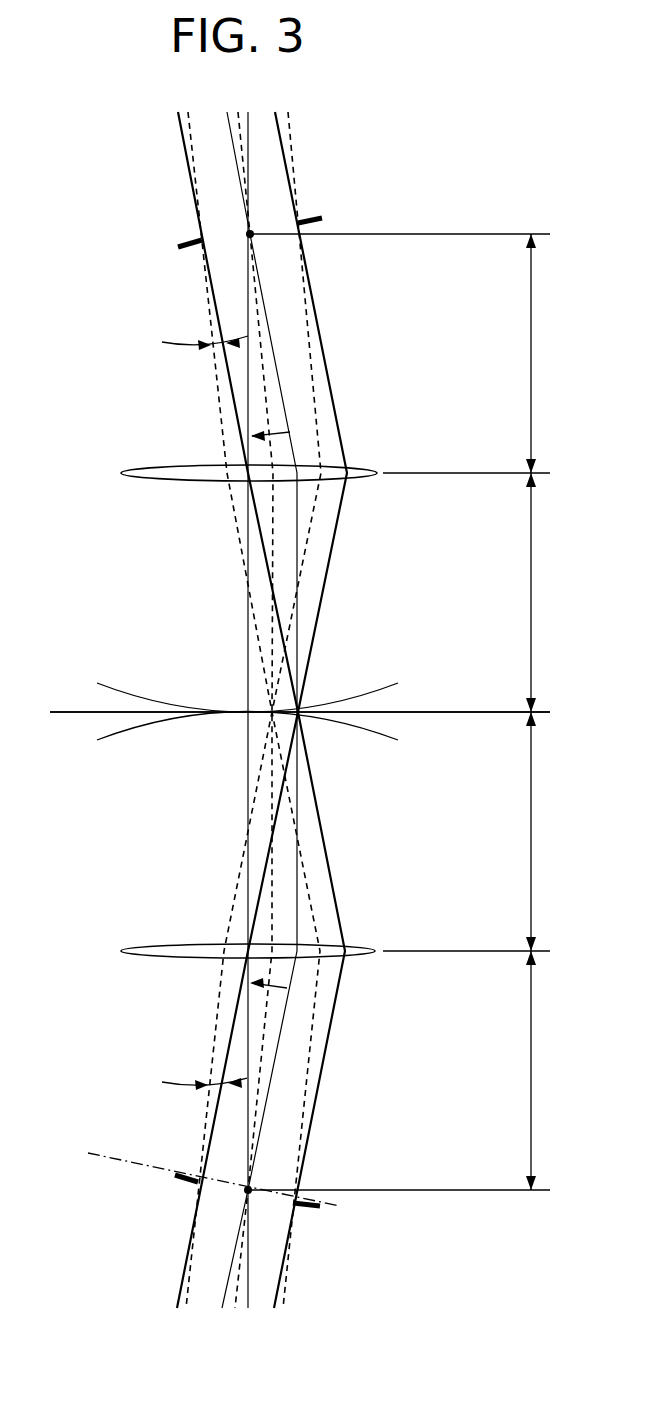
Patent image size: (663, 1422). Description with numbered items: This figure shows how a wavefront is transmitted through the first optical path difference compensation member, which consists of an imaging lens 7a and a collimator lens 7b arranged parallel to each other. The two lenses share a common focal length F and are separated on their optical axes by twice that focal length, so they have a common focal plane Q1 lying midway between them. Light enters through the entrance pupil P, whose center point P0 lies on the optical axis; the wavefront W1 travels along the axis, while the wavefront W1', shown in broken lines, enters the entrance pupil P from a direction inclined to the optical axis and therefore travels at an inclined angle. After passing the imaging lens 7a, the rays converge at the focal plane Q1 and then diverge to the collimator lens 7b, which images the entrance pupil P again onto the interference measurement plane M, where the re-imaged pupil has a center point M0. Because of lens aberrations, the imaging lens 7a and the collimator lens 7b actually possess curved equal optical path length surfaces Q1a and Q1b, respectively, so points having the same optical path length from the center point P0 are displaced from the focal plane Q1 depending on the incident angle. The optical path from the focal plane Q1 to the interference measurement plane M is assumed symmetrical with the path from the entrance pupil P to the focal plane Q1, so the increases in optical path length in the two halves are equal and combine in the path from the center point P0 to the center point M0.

The wavefront W1 is at (214, 710).
The wavefront W1' is at (286, 710).
The entrance pupil P is at (235, 236).
The center point P0 is at (252, 232).
The imaging lens 7a is at (152, 482).
The collimator lens 7b is at (150, 942).
The focal plane Q1 is at (277, 712).
The equal optical path length surface Q1a is at (230, 685).
The equal optical path length surface Q1b is at (230, 740).
The interference measurement plane M is at (196, 1173).
The center point M0 is at (250, 1192).
The focal length F is at (542, 712).